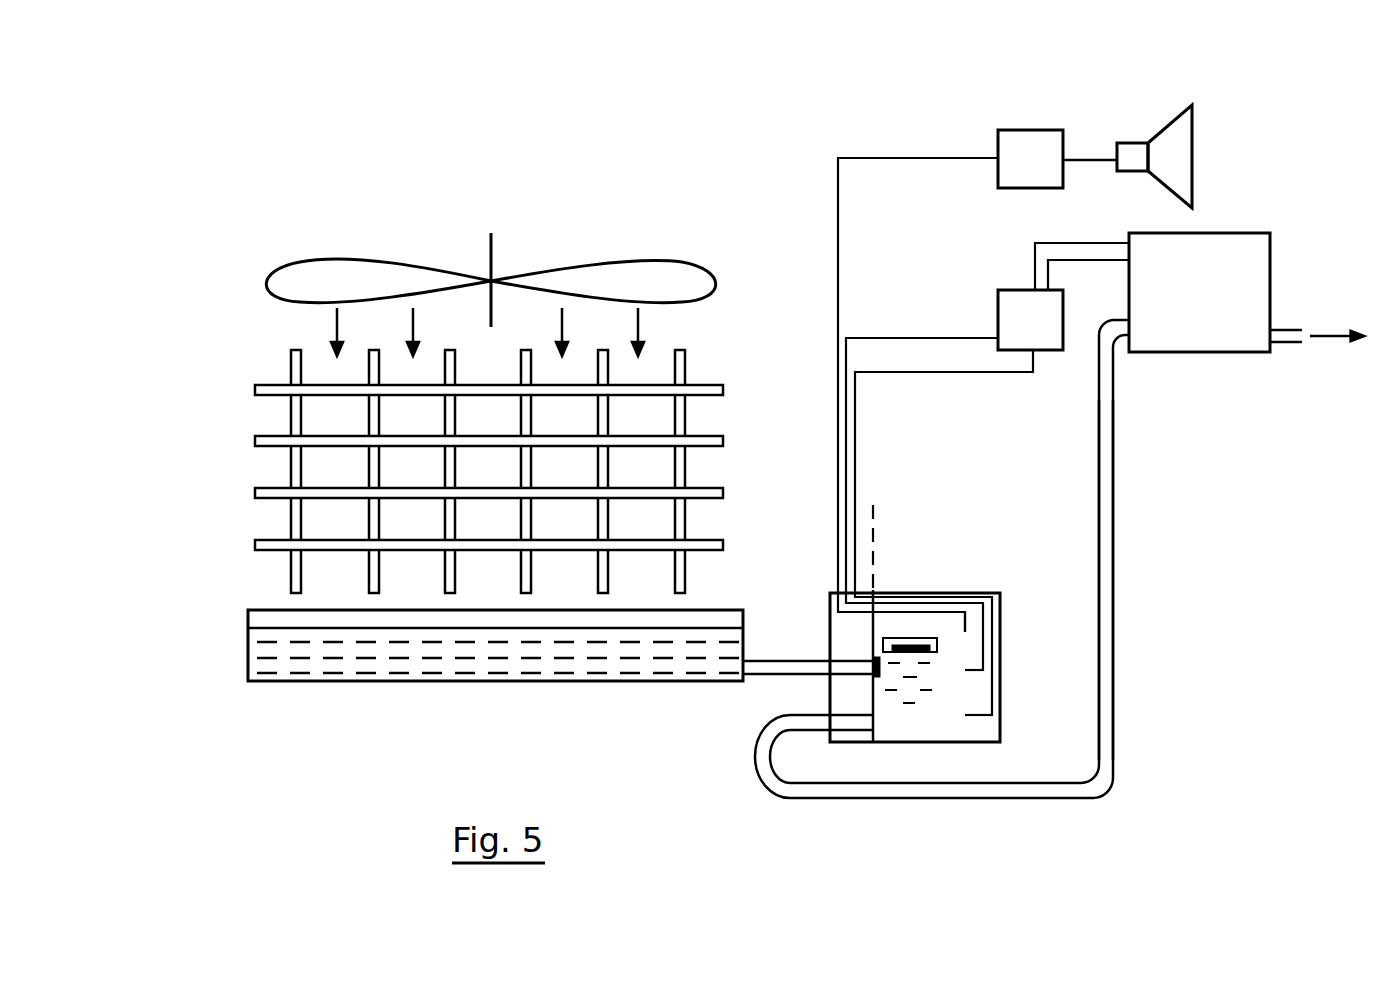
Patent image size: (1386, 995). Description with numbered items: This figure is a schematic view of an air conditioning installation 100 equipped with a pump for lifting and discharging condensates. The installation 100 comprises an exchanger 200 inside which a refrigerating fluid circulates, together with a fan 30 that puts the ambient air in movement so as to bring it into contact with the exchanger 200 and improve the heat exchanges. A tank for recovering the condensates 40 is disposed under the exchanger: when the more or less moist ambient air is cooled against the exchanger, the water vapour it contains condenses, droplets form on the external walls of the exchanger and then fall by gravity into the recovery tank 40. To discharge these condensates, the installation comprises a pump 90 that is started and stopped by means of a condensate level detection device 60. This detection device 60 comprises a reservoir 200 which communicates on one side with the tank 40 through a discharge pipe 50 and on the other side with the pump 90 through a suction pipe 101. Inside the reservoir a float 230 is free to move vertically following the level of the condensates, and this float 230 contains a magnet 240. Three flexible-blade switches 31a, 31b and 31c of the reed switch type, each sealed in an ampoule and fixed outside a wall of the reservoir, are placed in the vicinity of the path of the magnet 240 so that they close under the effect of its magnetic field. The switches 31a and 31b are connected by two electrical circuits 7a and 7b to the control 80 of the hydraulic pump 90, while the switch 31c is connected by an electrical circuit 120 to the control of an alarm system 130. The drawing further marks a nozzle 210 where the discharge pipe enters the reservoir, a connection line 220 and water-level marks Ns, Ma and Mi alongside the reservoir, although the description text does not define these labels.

The air conditioning installation 100 is at (263, 347).
The fan 30 is at (337, 275).
The exchanger / reservoir 200 is at (273, 540).
The tank for recovering the condensates 40 is at (393, 682).
The discharge pipe 50 is at (783, 660).
The condensate level detection device 60 is at (970, 553).
The nozzle 210 is at (885, 668).
The float 230 is at (868, 637).
The connection line 220 is at (875, 517).
The magnet 240 is at (908, 638).
The electrical circuit 120 is at (837, 251).
The alarm system 130 is at (1085, 138).
The electrical circuit 7a is at (942, 373).
The electrical circuit 7b is at (908, 337).
The control of the hydraulic pump 80 is at (1030, 312).
The pump 90 is at (1200, 337).
The suction pipe 101 is at (1113, 637).
The flexible-blade switch 31a is at (970, 717).
The flexible-blade switch 31b is at (967, 673).
The flexible-blade switch 31c is at (962, 623).
The upper water level Ns is at (1000, 623).
The middle water level Ma is at (1000, 668).
The lower water level Mi is at (1000, 713).